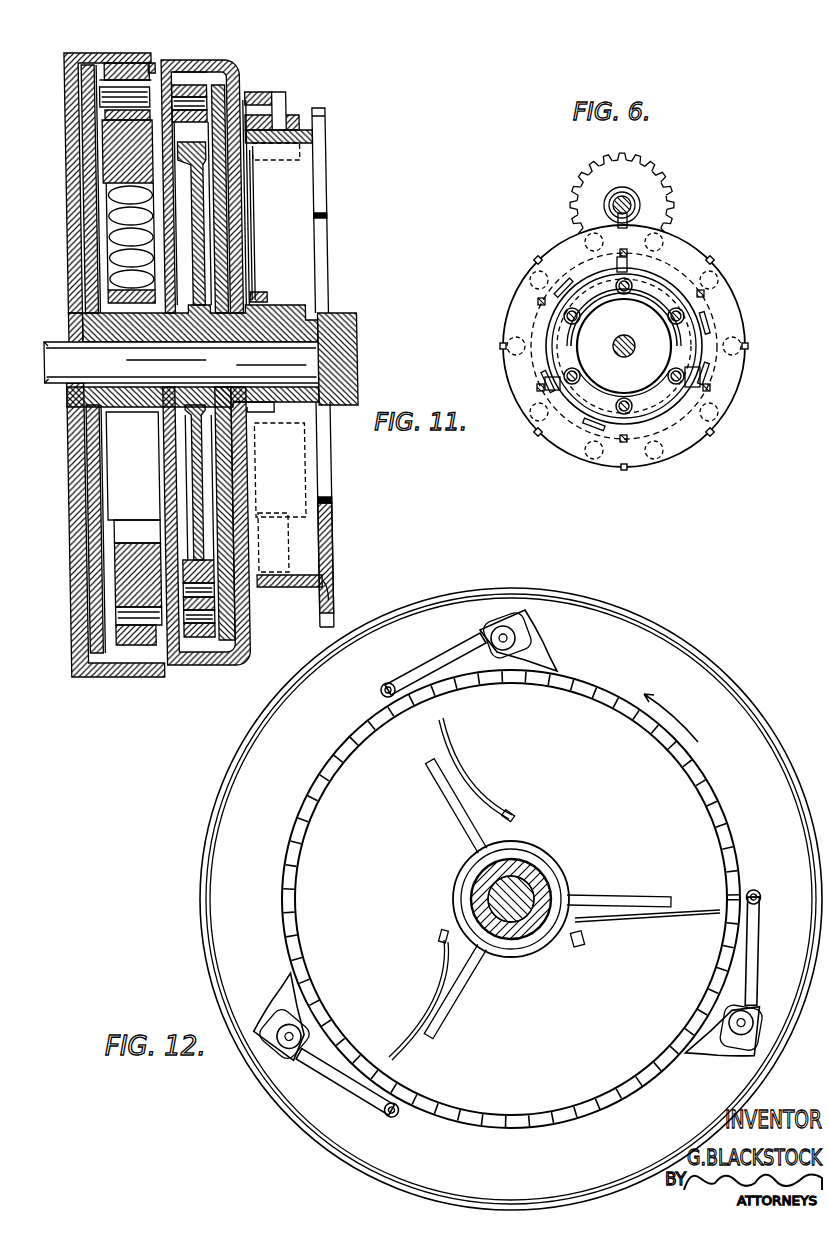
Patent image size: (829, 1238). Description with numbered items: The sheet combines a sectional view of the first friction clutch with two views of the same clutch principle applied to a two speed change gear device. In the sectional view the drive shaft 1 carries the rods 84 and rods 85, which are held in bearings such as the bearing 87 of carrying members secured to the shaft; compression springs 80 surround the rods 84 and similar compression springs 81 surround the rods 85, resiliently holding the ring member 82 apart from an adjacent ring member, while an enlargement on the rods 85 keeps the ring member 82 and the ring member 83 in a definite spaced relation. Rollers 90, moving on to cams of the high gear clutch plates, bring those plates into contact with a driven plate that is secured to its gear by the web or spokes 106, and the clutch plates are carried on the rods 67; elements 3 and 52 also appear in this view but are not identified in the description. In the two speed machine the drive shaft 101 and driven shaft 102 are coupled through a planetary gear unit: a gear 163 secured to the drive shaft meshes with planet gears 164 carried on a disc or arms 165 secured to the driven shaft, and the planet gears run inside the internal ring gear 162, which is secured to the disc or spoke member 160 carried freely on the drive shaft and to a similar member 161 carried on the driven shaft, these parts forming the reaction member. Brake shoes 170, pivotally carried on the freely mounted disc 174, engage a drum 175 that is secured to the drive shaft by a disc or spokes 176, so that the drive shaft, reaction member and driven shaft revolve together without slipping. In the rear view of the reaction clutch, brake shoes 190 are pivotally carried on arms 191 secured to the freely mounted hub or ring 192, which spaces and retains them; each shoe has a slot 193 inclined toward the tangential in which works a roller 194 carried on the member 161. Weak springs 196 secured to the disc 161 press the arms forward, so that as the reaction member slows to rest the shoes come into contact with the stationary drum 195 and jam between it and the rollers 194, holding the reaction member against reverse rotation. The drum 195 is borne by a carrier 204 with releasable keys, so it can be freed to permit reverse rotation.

In FIG. 6, the drive shaft 1 is at (635, 340).
In FIG. 6, the gear shaft 3 is at (633, 203).
In FIG. 6, the gear 52 is at (674, 202).
In FIG. 6, the rods 67 is at (636, 240).
In FIG. 6, the compression springs 80 is at (627, 399).
In FIG. 6, the compression springs 81 is at (703, 372).
In FIG. 6, the ring member 82 is at (697, 352).
In FIG. 6, the ring member 83 is at (651, 328).
In FIG. 6, the rods 84 is at (618, 404).
In FIG. 6, the rods 85 is at (670, 383).
In FIG. 6, the bearing 87 is at (633, 288).
In FIG. 6, the rollers 90 is at (702, 387).
In FIG. 11, the drive shaft 101 is at (325, 352).
In FIG. 11, the driven shaft 102 is at (342, 396).
In FIG. 6, the driven shaft 102 is at (734, 305).
In FIG. 6, the web or spokes 106 is at (714, 252).
In FIG. 11, the disc or spoke member 160 is at (158, 470).
In FIG. 12, the disc or spoke member 160 is at (214, 963).
In FIG. 11, the disc or spoke member 161 is at (227, 271).
In FIG. 12, the disc or spoke member 161 is at (333, 879).
In FIG. 11, the internal ring gear 162 is at (232, 73).
In FIG. 11, the gear 163 is at (191, 228).
In FIG. 11, the planet gears 164 is at (200, 86).
In FIG. 11, the disc or arms 165 is at (262, 100).
In FIG. 11, the brake shoes 170 is at (120, 62).
In FIG. 11, the disc 174 is at (81, 237).
In FIG. 11, the drum 175 is at (92, 58).
In FIG. 11, the disc or spokes 176 is at (62, 535).
In FIG. 11, the brake shoes 190 is at (300, 117).
In FIG. 12, the brake shoes 190 is at (298, 1005).
In FIG. 11, the arms 191 is at (250, 295).
In FIG. 12, the arms 191 is at (432, 1044).
In FIG. 11, the hub or ring 192 is at (258, 302).
In FIG. 12, the hub or ring 192 is at (531, 950).
In FIG. 11, the slot 193 is at (282, 110).
In FIG. 12, the slot 193 is at (272, 1042).
In FIG. 11, the roller 194 is at (285, 93).
In FIG. 12, the roller 194 is at (296, 1025).
In FIG. 11, the stationary drum 195 is at (312, 135).
In FIG. 12, the stationary drum 195 is at (285, 942).
In FIG. 11, the weak springs 196 is at (245, 200).
In FIG. 12, the weak springs 196 is at (437, 976).
In FIG. 11, the carrier 204 is at (322, 213).